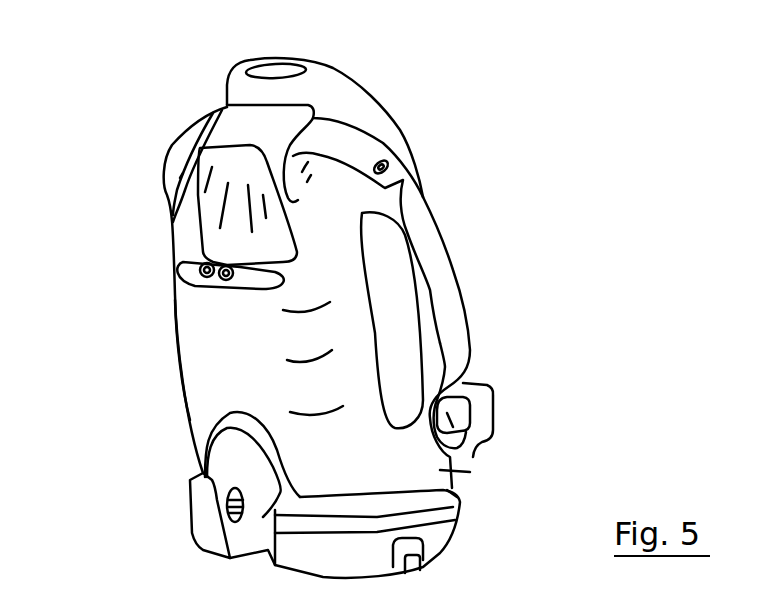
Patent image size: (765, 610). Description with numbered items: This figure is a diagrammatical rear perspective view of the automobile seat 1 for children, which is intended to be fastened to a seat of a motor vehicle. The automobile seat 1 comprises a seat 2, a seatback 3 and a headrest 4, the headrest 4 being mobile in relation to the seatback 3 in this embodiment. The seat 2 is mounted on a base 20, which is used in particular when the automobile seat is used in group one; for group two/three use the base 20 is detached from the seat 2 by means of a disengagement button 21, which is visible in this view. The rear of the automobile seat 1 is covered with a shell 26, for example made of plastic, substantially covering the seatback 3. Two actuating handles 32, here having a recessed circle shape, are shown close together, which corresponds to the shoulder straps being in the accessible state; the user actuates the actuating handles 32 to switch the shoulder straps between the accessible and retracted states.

The automobile seat 1 is at (451, 208).
The seat 2 is at (440, 470).
The seatback 3 is at (223, 337).
The headrest 4 is at (337, 83).
The base 20 is at (353, 560).
The disengagement button 21 is at (236, 500).
The shell 26 is at (187, 378).
The actuating handle 32 is at (222, 266).